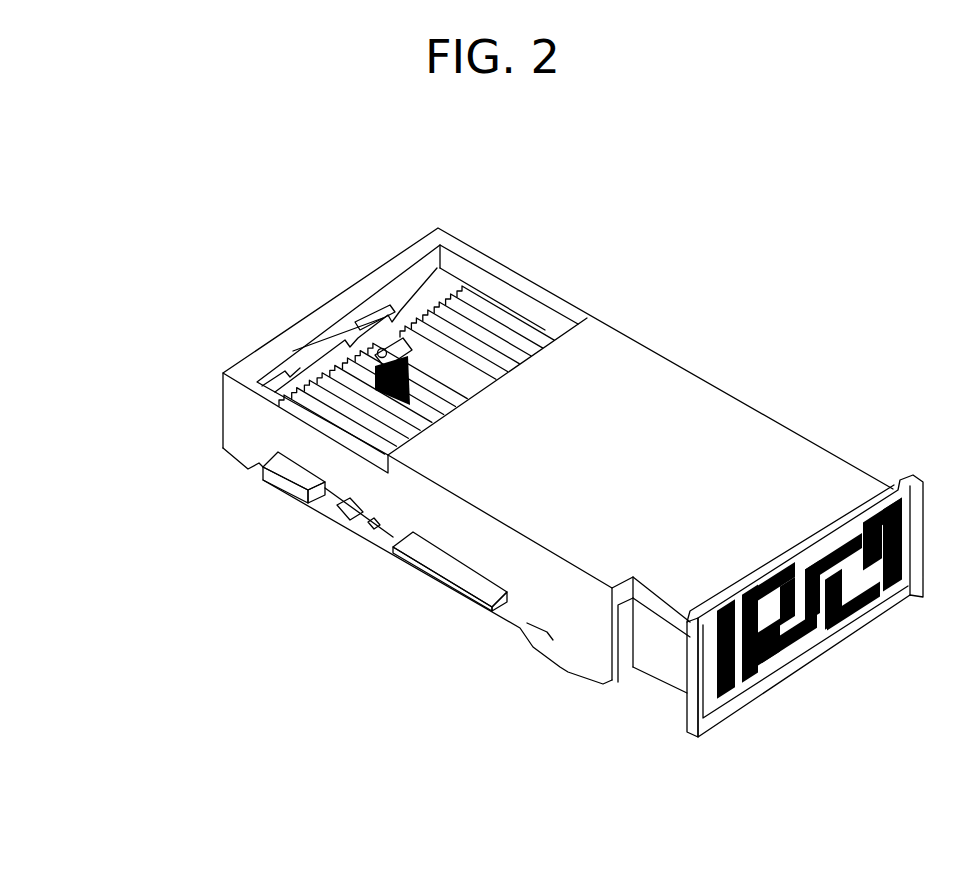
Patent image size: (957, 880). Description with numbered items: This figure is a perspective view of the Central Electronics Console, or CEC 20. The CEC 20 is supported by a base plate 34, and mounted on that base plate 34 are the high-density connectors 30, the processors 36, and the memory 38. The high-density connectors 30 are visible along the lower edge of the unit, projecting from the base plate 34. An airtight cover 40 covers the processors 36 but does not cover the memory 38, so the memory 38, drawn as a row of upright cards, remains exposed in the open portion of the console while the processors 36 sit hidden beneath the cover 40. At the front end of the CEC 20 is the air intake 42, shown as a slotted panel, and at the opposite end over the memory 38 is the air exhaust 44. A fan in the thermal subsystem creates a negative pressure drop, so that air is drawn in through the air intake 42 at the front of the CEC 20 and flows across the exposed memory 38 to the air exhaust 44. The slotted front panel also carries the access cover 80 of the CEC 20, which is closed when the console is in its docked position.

The Central Electronics Console (CEC) 20 is at (470, 322).
The air exhaust 44 is at (320, 348).
The memory 38 is at (485, 363).
The airtight cover 40 is at (638, 345).
The processor 36 is at (797, 540).
The high-density connectors 30 is at (407, 582).
The base plate 34 is at (518, 630).
The air intake 42 is at (828, 663).
The access cover 80 is at (733, 700).